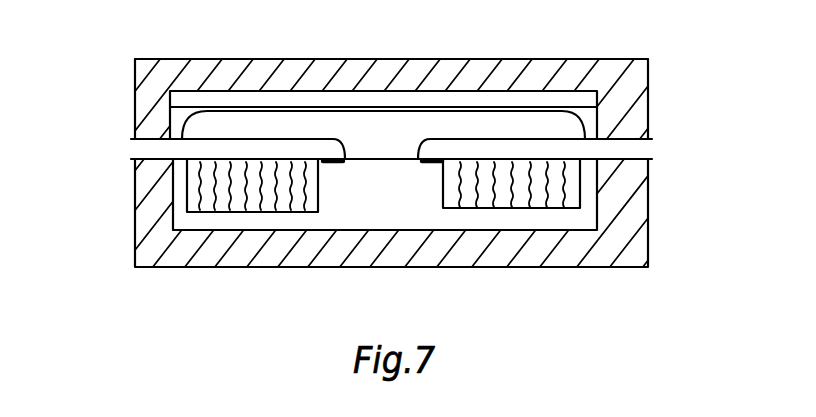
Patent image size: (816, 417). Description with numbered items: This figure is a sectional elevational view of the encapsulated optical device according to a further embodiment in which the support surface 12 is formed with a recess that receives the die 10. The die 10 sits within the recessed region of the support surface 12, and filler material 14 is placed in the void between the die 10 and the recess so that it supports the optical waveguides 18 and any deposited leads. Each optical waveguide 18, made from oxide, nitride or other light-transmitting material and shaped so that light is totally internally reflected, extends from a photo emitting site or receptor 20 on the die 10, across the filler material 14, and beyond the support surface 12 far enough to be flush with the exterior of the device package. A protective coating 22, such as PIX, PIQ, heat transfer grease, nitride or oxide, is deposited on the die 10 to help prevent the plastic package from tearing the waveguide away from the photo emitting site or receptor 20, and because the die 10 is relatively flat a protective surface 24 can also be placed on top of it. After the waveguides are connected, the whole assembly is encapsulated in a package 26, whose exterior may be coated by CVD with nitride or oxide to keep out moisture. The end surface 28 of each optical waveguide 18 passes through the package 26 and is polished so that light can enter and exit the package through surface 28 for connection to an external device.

The die 10 is at (390, 202).
The support surface 12 is at (173, 204).
The filler material 14 is at (278, 188).
The optical waveguide 18 is at (155, 157).
The photo emitting site or receptor 20 is at (333, 163).
The protective coating 22 is at (397, 150).
The protective surface 24 is at (533, 93).
The package 26 is at (236, 72).
The surface of optical waveguide 28 is at (134, 149).